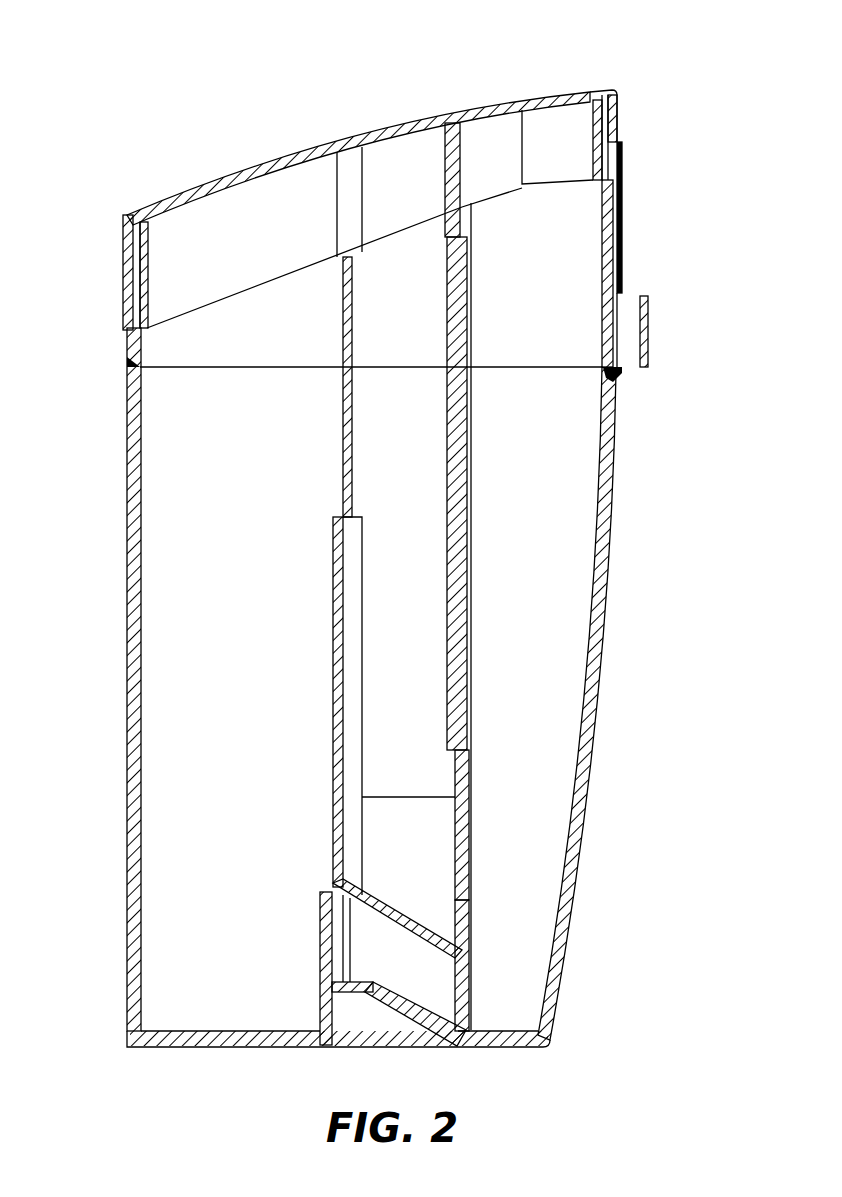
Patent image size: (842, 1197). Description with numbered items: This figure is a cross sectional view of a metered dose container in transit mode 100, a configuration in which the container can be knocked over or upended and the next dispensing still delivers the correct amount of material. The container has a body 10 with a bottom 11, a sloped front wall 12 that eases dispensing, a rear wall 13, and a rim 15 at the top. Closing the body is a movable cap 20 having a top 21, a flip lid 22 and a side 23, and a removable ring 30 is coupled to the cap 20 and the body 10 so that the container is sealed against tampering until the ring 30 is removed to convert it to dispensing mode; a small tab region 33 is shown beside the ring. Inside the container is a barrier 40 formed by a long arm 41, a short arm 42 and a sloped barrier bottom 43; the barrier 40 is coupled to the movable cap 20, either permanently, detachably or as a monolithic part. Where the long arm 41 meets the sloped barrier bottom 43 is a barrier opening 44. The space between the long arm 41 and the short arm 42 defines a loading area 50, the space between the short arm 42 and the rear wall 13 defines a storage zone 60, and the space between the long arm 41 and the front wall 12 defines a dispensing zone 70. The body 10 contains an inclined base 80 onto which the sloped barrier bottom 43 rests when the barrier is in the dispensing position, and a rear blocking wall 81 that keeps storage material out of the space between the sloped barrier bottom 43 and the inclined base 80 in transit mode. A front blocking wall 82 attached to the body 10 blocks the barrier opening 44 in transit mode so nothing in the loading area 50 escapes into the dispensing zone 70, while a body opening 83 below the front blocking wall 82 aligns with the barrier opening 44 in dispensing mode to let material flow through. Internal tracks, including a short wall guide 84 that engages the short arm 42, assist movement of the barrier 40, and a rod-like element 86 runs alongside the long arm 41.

The metered dose container in transit mode 100 is at (137, 84).
The body 10 is at (655, 641).
The bottom 11 is at (476, 1047).
The front wall 12 is at (578, 847).
The rear wall 13 is at (127, 778).
The rim 15 is at (128, 367).
The movable cap 20 is at (430, 90).
The top 21 is at (277, 164).
The flip lid 22 is at (557, 92).
The side 23 is at (622, 218).
The removable ring 30 is at (130, 300).
The latch tab 33 is at (648, 322).
The barrier 40 is at (443, 740).
The long arm 41 is at (471, 540).
The short arm 42 is at (333, 703).
The sloped barrier bottom 43 is at (403, 932).
The barrier opening 44 is at (468, 933).
The loading area 50 is at (425, 693).
The storage zone 60 is at (245, 578).
The dispensing zone 70 is at (558, 620).
The inclined base 80 is at (397, 1010).
The rear blocking wall 81 is at (320, 930).
The front blocking wall 82 is at (473, 892).
The body opening 83 is at (470, 970).
The short wall guide 84 is at (343, 437).
The rod 86 is at (471, 513).